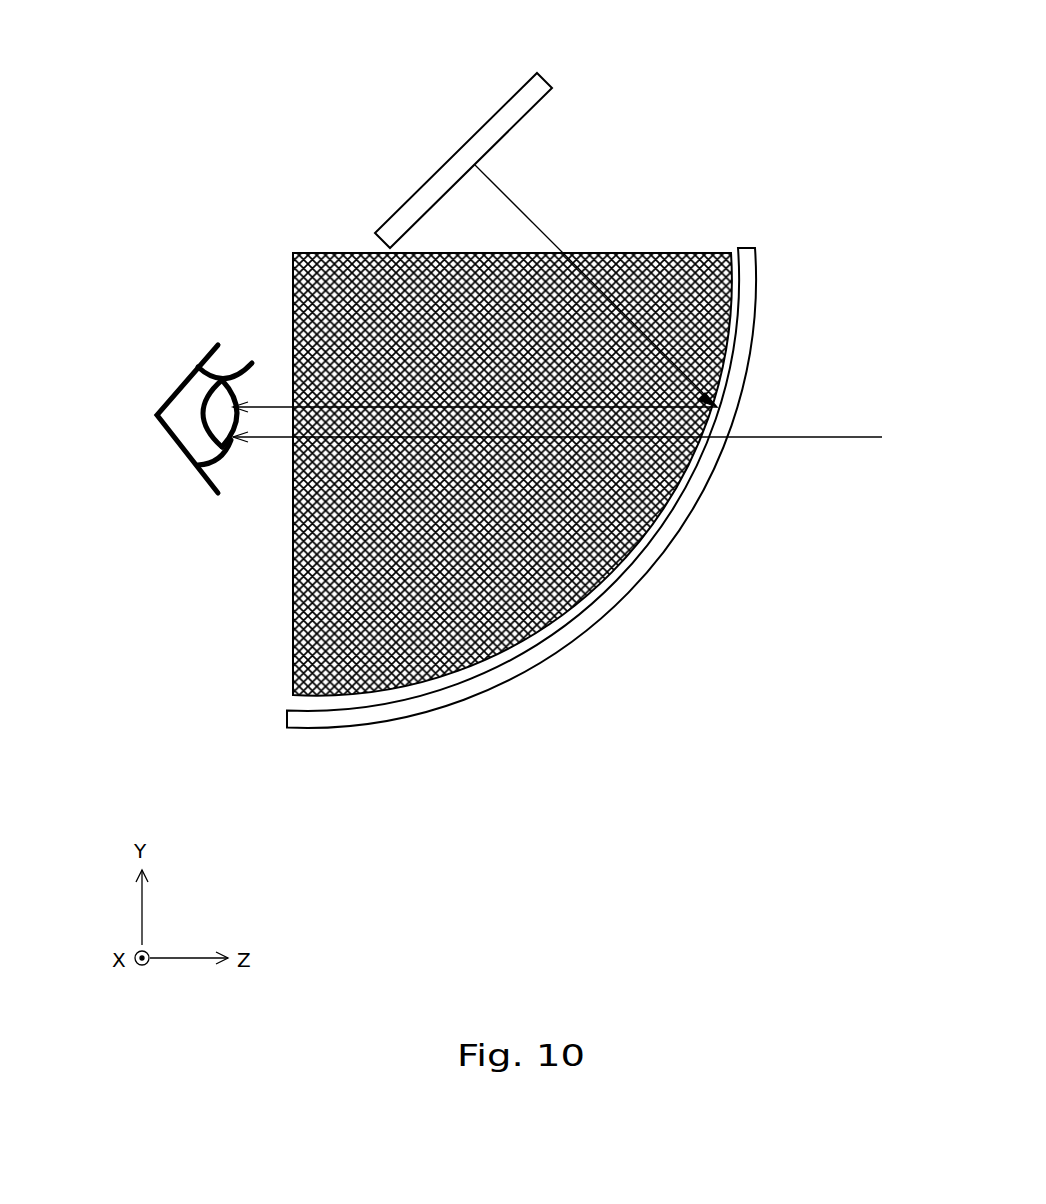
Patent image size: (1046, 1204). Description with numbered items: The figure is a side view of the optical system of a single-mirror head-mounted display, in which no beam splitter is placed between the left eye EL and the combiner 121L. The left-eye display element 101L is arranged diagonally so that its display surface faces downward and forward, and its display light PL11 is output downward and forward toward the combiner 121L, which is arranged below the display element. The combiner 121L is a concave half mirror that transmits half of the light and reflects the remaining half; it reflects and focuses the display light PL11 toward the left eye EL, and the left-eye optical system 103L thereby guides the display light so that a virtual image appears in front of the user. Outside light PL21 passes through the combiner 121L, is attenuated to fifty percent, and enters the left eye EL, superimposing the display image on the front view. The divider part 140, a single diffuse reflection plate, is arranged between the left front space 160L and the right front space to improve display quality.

The left-eye display element 101L is at (525, 73).
The left-eye optical system 103L is at (775, 208).
The display light PL11 is at (542, 233).
The combiner 121L is at (750, 299).
The divider part 140 is at (342, 277).
The left eye EL is at (177, 443).
The left front space 160L is at (262, 613).
The outside light PL21 is at (830, 438).